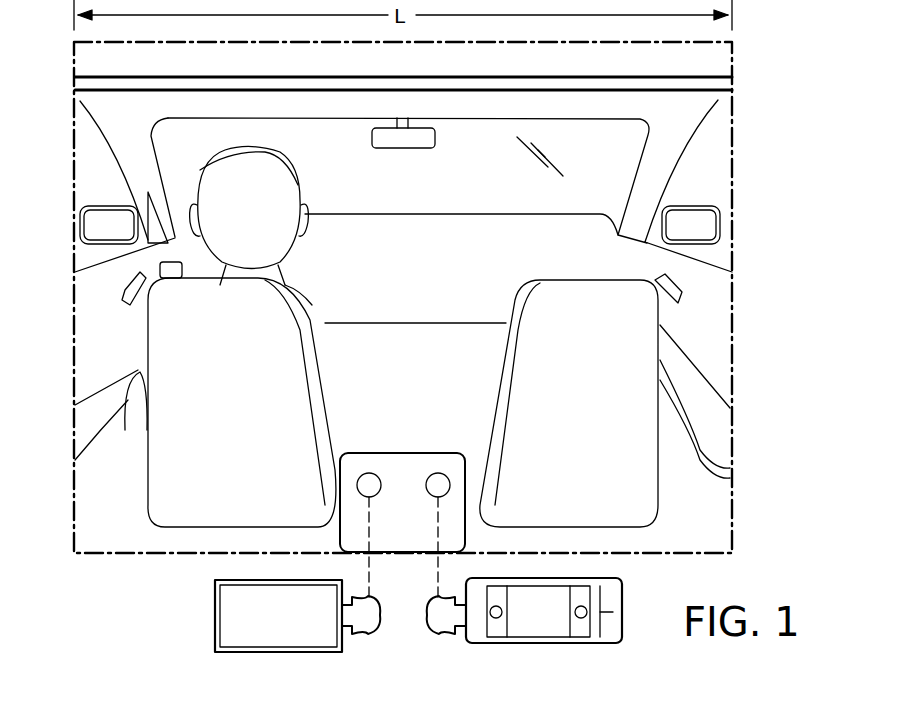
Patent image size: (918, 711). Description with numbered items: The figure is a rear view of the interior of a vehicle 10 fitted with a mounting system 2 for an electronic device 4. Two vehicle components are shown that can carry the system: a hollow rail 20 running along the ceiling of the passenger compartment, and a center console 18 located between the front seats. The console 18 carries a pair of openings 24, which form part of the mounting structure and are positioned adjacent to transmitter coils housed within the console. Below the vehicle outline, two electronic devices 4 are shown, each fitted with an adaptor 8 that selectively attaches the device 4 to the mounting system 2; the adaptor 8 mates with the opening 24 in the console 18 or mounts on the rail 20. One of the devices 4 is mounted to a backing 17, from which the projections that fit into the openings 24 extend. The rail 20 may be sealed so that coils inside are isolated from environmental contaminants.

The vehicle 10 is at (764, 112).
The rail 20 is at (605, 77).
The center console 18 is at (402, 453).
The opening 24 is at (370, 473).
The mounting system 2 is at (190, 583).
The electronic device 4 is at (272, 625).
The adaptor 8 is at (440, 625).
The backing 17 is at (612, 628).